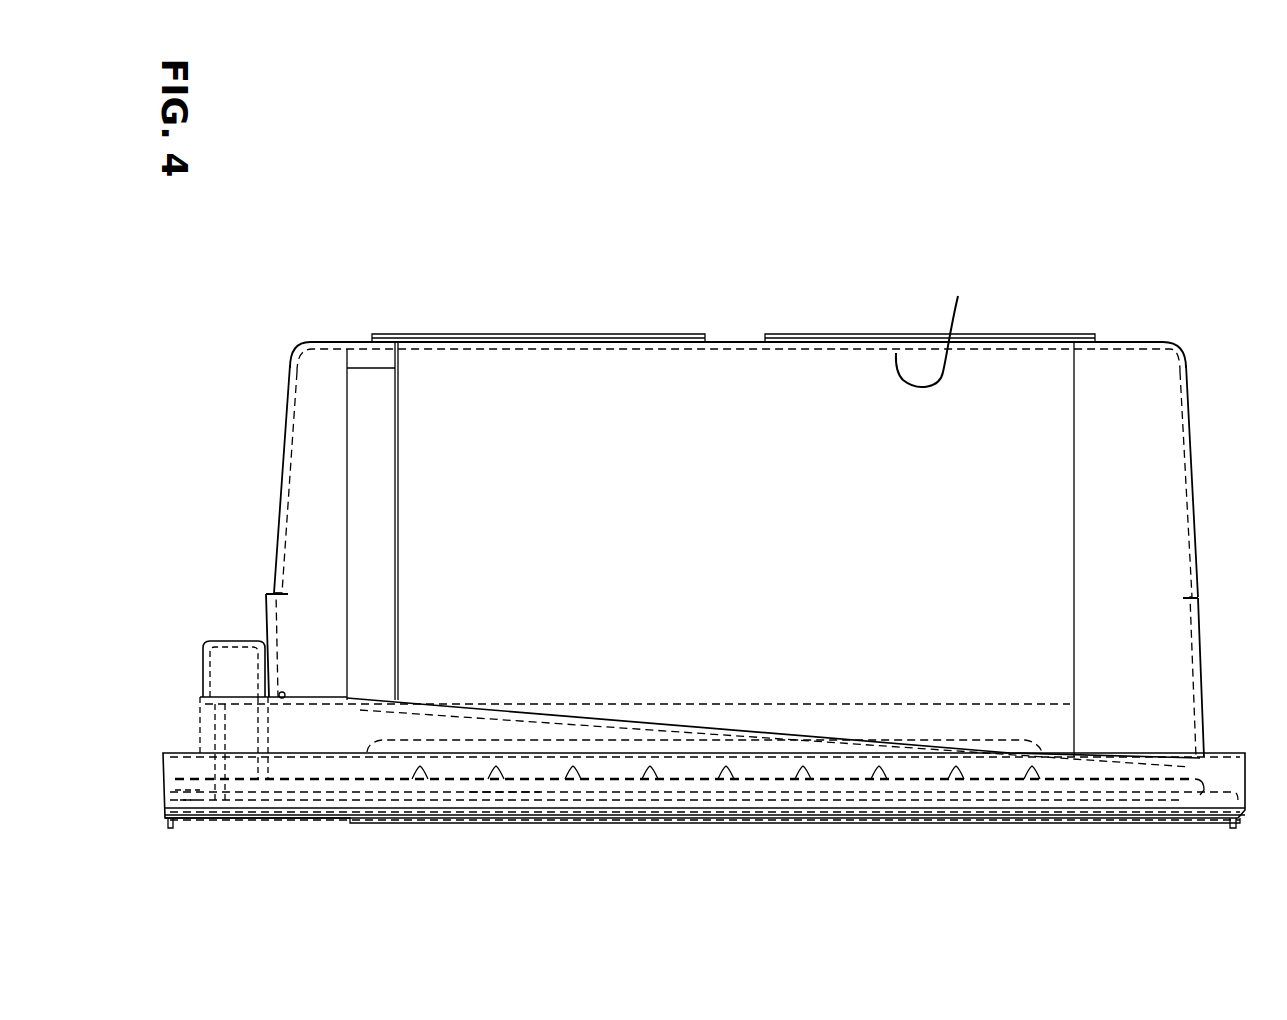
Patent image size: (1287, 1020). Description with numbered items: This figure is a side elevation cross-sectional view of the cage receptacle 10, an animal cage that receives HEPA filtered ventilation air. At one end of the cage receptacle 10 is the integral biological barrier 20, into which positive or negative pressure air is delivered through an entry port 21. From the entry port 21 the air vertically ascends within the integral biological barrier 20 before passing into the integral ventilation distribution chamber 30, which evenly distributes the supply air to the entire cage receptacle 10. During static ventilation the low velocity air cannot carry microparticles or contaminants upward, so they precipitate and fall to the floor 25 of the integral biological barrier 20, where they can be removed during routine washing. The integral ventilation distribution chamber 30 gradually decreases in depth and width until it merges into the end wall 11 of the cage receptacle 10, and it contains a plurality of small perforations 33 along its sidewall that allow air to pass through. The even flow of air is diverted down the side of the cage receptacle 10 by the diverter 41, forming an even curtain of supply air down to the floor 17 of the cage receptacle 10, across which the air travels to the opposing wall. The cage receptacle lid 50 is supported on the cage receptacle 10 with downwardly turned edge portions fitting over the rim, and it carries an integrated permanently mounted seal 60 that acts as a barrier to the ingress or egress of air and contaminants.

The cage receptacle 10 is at (668, 407).
The end wall 11 is at (285, 436).
The floor 17 is at (934, 327).
The integral biological barrier 20 is at (218, 722).
The entry port 21 is at (213, 669).
The floor 25 is at (224, 643).
The integral ventilation distribution chamber 30 is at (297, 730).
The small perforations 33 is at (500, 778).
The diverter 41 is at (385, 762).
The cage receptacle lid 50 is at (165, 776).
The integrated seal 60 is at (190, 795).